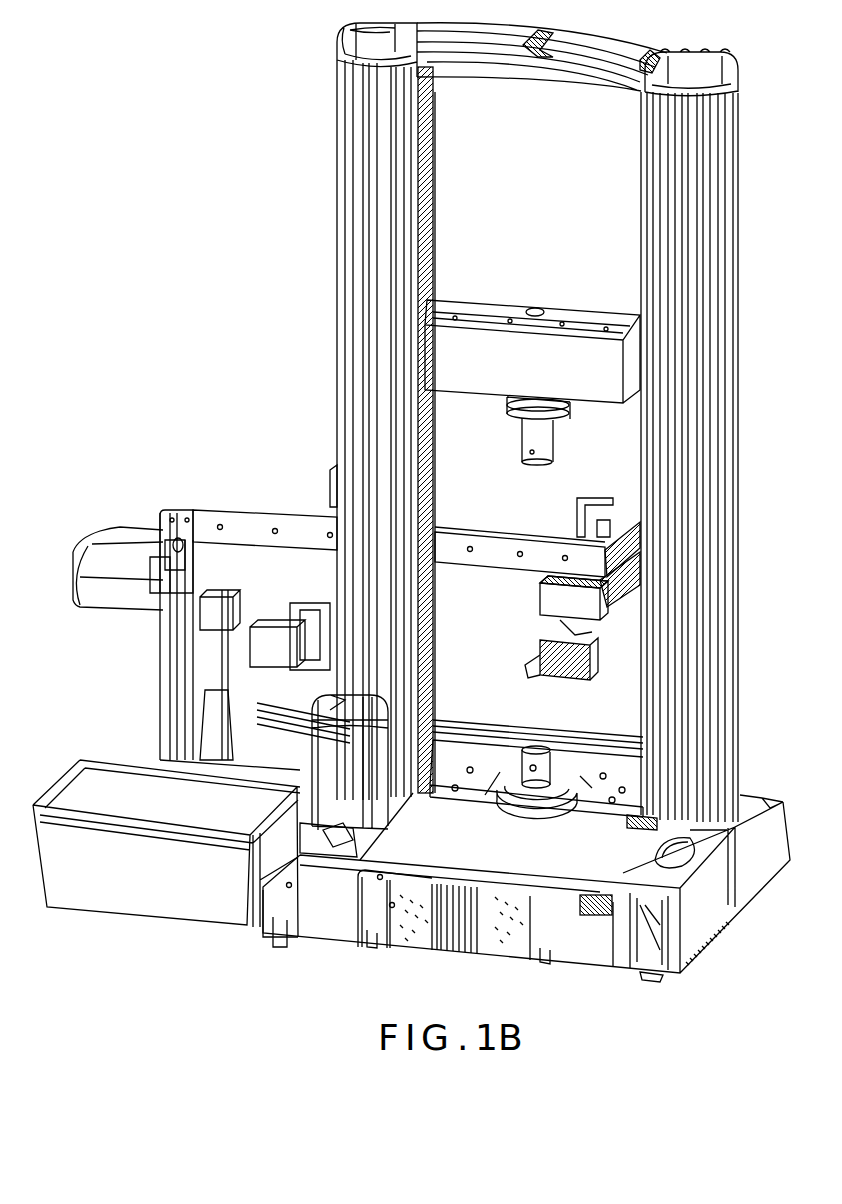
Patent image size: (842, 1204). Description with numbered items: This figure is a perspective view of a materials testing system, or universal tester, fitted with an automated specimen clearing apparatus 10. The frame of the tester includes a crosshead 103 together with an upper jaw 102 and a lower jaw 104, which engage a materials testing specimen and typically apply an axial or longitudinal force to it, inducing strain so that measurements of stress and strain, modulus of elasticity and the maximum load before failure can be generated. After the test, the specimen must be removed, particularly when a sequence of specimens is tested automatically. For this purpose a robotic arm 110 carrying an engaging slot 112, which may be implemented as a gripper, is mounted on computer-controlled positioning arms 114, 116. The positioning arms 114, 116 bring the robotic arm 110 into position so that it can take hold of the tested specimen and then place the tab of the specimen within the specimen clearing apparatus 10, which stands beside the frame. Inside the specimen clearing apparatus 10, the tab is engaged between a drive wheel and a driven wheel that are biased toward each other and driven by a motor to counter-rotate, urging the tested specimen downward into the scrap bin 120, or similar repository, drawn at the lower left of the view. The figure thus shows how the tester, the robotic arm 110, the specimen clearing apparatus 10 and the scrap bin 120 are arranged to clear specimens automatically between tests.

The specimen clearing apparatus 10 is at (262, 588).
The upper jaw 102 is at (503, 413).
The crosshead 103 is at (488, 308).
The lower jaw 104 is at (556, 752).
The robotic arm 110 is at (557, 628).
The engaging slot 112 is at (547, 673).
The positioning arm 114 is at (517, 545).
The positioning arm 116 is at (630, 522).
The scrap bin 120 is at (105, 757).